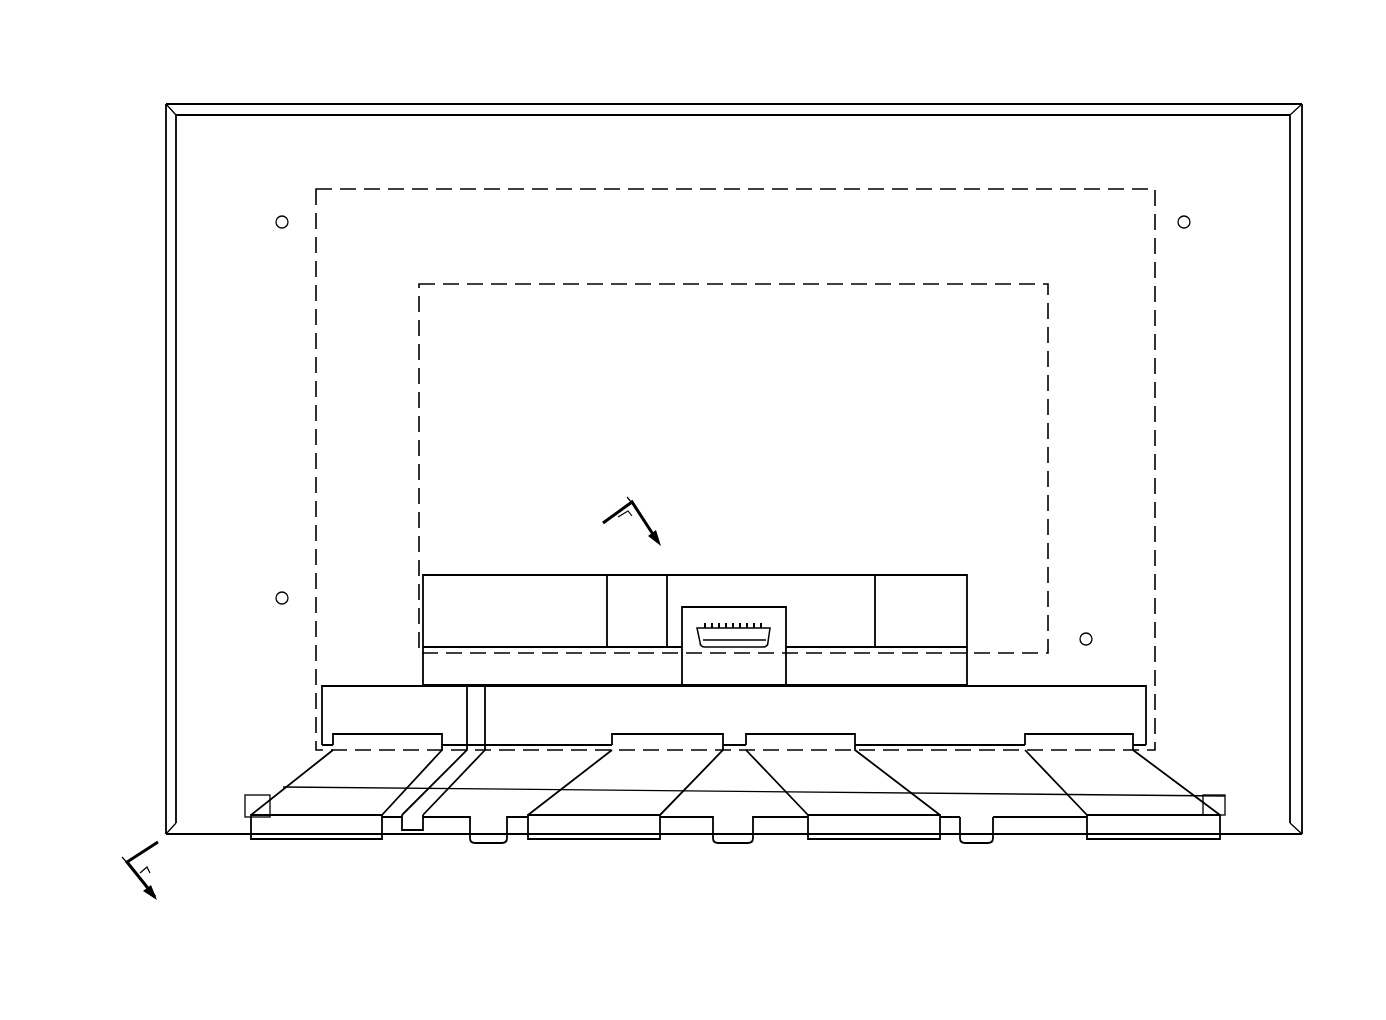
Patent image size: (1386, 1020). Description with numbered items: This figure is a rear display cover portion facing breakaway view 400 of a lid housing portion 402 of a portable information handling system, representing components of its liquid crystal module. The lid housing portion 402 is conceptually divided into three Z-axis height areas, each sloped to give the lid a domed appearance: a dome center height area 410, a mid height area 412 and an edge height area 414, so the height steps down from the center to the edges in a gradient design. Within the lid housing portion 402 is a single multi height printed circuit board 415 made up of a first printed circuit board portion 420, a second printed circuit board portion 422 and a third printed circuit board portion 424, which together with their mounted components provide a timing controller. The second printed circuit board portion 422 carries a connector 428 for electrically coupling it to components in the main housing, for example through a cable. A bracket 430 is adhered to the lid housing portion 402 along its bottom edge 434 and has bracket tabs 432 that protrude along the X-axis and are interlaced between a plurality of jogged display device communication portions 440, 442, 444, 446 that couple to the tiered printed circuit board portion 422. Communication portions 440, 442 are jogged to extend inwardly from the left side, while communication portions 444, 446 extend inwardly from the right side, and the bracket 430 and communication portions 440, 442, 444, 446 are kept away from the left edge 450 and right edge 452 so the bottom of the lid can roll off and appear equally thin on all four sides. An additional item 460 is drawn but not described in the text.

The rear display cover portion facing breakaway view 400 is at (1083, 68).
The lid housing portion 402 is at (864, 105).
The dome center height area 410 is at (1277, 178).
The mid height area 412 is at (1035, 196).
The edge height area 414 is at (884, 292).
The multi height printed circuit board 415 is at (855, 545).
The printed circuit board portion 420 is at (1107, 686).
The printed circuit board portion 422 is at (970, 585).
The printed circuit board portion 424 is at (968, 668).
The connector 428 is at (729, 625).
The bracket 430 is at (1046, 818).
The bracket tabs 432 is at (979, 845).
The bottom edge 434 is at (223, 835).
The display device communication portion 440 is at (316, 840).
The display device communication portion 442 is at (597, 840).
The display device communication portion 444 is at (876, 840).
The display device communication portion 446 is at (1153, 840).
The left edge 450 is at (168, 272).
The right edge 452 is at (1301, 578).
The cable connector 460 is at (420, 833).